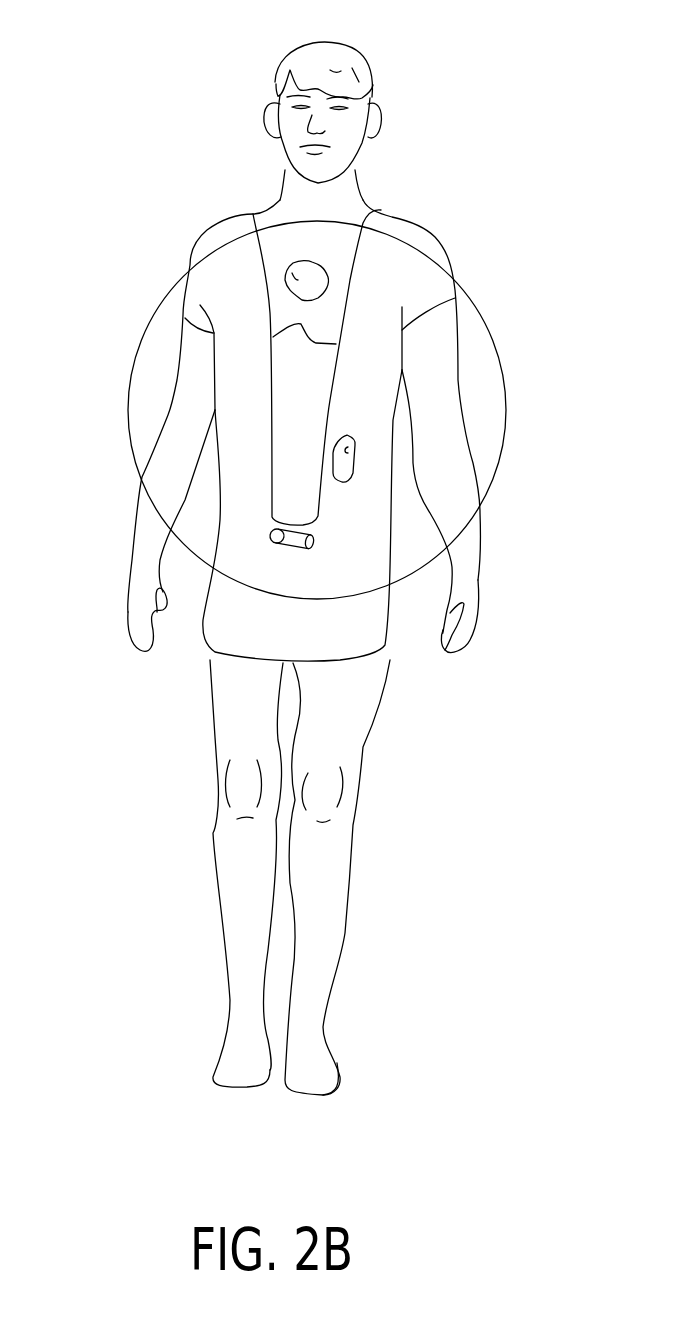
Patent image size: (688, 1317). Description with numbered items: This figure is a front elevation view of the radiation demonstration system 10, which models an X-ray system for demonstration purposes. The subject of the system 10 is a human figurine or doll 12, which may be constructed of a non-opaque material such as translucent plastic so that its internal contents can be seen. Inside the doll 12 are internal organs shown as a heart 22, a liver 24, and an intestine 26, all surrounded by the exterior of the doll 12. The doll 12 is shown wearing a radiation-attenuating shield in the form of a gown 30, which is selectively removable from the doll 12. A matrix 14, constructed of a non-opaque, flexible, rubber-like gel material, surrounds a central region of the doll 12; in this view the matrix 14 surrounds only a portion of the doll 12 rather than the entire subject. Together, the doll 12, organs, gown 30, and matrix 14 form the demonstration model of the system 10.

The radiation demonstration system 10 is at (138, 110).
The doll 12 is at (368, 35).
The matrix 14 is at (490, 333).
The heart 22 is at (290, 280).
The liver 24 is at (347, 449).
The intestine 26 is at (313, 541).
The gown 30 is at (418, 209).